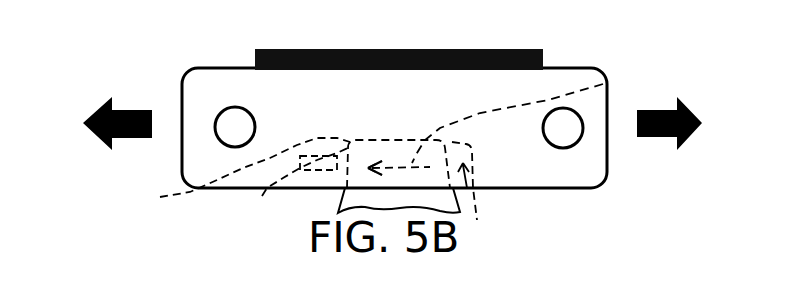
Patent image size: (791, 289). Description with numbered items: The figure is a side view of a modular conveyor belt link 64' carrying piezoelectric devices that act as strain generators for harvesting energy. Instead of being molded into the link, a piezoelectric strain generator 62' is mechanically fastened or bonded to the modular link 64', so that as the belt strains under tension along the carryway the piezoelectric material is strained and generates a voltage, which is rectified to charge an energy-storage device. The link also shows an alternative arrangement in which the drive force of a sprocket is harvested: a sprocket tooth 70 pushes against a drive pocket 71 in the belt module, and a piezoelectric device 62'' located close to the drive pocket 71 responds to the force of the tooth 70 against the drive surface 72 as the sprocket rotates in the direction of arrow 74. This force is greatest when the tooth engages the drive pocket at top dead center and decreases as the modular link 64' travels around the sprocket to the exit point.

The piezoelectric strain generator 62' is at (390, 39).
The piezoelectric device 62'' is at (282, 191).
The modular link 64' is at (400, 141).
The sprocket tooth 70 is at (340, 199).
The drive pocket 71 is at (481, 207).
The drive surface 72 is at (170, 197).
The arrow 74 is at (603, 84).